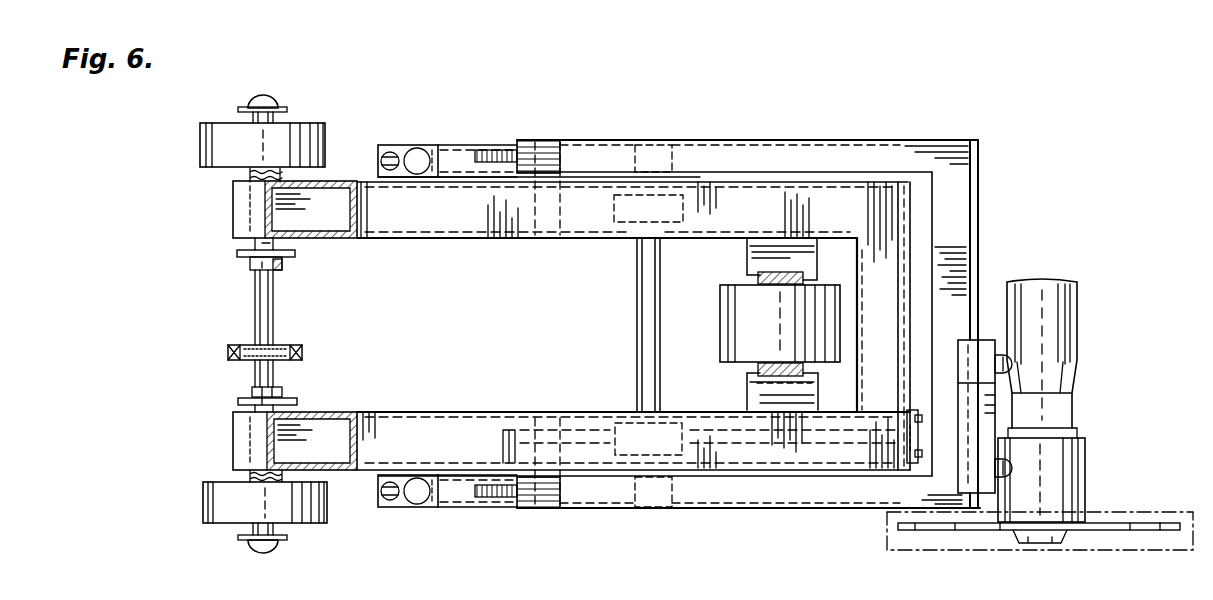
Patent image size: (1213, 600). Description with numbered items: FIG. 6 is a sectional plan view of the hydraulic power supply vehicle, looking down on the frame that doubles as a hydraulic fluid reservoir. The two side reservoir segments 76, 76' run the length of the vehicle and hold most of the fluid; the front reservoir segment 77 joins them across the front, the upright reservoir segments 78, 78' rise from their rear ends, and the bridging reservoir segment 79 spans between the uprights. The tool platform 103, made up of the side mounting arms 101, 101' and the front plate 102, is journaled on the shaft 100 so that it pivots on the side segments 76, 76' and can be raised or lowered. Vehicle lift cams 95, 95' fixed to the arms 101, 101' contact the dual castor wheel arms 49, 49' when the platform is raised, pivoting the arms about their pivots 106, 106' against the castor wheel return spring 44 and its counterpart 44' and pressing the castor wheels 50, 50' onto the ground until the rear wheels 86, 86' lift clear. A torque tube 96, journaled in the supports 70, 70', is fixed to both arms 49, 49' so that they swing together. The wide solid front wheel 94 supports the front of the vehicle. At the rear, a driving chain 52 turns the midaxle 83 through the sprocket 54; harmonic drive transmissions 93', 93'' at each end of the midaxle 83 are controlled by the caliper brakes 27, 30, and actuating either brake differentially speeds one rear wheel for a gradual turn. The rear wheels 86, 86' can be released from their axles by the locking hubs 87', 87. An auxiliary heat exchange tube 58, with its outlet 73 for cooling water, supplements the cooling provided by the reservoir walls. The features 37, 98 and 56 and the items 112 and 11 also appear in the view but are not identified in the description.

The tool platform 103 is at (988, 182).
The side mounting arm 101' is at (678, 136).
The tool mounting arm 101 is at (679, 517).
The front plate 102 is at (976, 265).
The front reservoir segment 77 is at (893, 255).
The side reservoir segment 76' is at (632, 169).
The side reservoir segment 76 is at (762, 386).
The support 70' is at (630, 240).
The support 70 is at (764, 325).
The auxiliary heat exchange tube 58 is at (590, 412).
The torque tube 96 is at (640, 305).
The front wheel 94 is at (726, 304).
The upper bearing block 44' is at (408, 130).
The castor wheel return spring 44 is at (399, 518).
The castor wheel 50' is at (475, 131).
The castor wheel 50 is at (463, 514).
The castor wheel arm 49' is at (493, 120).
The castor wheel arm 49 is at (476, 525).
The vehicle lift cam 95' is at (523, 131).
The vehicle lift cam 95 is at (497, 494).
The shaft 100 is at (548, 508).
The pivot 106' is at (608, 123).
The pivot 106 is at (666, 517).
The upright reservoir segment 78' is at (258, 209).
The upright reservoir segment 78 is at (295, 486).
The rear wheel 86' is at (230, 148).
The rear wheel 86 is at (237, 488).
The locking hub 87' is at (284, 98).
The locking hub 87 is at (227, 542).
The harmonic drive transmission 93' is at (226, 249).
The harmonic drive transmission 93'' is at (228, 416).
The caliper brake 27 is at (284, 264).
The midaxle 83 is at (257, 308).
The driving chain 52 is at (228, 352).
The sprocket 54 is at (247, 361).
The caliper brake 30 is at (290, 392).
The outlet 73 is at (919, 437).
The support bracket 98 is at (1072, 472).
The cylinder 37 is at (1060, 324).
The base plate 56 is at (1160, 531).
The bridging reservoir segment 79 is at (138, 588).
The element 112 is at (200, 597).
The element 11 is at (283, 588).